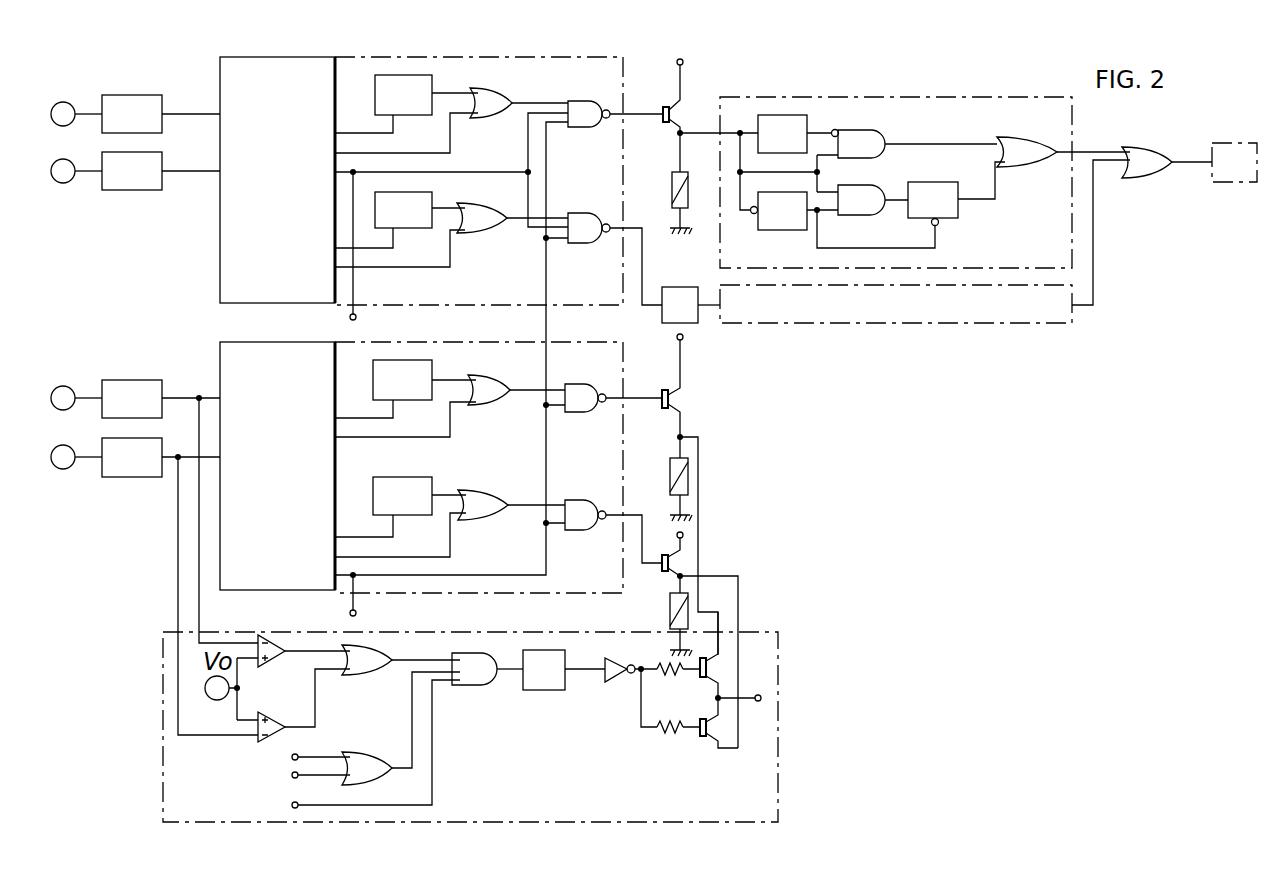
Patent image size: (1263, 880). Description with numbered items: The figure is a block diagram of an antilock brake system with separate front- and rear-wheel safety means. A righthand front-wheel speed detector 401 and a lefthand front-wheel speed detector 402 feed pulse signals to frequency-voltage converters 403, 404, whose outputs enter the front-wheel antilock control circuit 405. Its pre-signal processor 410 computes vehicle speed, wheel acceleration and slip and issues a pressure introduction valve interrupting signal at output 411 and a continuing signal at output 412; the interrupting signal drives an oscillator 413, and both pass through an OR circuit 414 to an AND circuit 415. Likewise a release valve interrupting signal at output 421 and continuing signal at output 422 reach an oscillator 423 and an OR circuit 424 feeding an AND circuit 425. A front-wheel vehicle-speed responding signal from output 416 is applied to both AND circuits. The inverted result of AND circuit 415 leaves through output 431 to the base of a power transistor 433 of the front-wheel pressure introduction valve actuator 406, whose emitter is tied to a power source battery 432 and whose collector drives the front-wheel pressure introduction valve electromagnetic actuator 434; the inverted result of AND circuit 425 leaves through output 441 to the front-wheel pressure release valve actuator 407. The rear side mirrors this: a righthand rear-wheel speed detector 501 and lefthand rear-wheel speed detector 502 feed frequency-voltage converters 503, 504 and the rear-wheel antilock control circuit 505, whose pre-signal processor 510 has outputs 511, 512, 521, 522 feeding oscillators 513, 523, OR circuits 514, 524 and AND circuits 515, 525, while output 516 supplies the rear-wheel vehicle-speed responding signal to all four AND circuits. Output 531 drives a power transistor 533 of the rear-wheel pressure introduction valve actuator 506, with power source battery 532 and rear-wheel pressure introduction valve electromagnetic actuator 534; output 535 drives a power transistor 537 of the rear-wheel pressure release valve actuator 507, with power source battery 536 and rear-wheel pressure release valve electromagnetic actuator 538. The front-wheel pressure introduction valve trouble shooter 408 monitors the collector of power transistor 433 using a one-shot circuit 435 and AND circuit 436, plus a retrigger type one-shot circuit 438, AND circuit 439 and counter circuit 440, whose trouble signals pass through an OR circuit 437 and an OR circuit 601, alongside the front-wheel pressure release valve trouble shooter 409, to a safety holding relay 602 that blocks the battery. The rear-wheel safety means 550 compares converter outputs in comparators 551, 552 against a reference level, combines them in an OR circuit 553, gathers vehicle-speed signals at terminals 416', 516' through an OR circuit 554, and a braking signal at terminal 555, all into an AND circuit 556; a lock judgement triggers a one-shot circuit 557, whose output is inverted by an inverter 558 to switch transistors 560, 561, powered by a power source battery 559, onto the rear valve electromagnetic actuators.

The righthand front-wheel speed detector 401 is at (63, 102).
The lefthand front-wheel speed detector 402 is at (63, 183).
The frequency-voltage converter 403 is at (156, 127).
The frequency-voltage converter 404 is at (156, 184).
The front-wheel antilock control circuit 405 is at (212, 66).
The front-wheel pressure introduction valve actuator 406 is at (658, 87).
The front-wheel pressure release valve actuator 407 is at (676, 280).
The front-wheel pressure introduction valve trouble shooter 408 is at (882, 95).
The front-wheel pressure release valve trouble shooter 409 is at (928, 331).
The pre-signal processor 410 is at (290, 188).
The output 411 is at (344, 130).
The output 412 is at (386, 139).
The oscillator 413 is at (427, 109).
The OR circuit 414 is at (505, 113).
The AND circuit 415 is at (598, 123).
The output 416 is at (431, 213).
The terminal 416' is at (326, 539).
The output 421 is at (344, 244).
The output 422 is at (380, 254).
The oscillator 423 is at (427, 225).
The OR circuit 424 is at (494, 228).
The AND circuit 425 is at (598, 237).
The output 431 is at (611, 121).
The power source battery 432 is at (706, 57).
The power transistor 433 is at (663, 123).
The front-wheel pressure introduction valve electromagnetic actuator 434 is at (672, 189).
The one-shot circuit 435 is at (803, 144).
The AND circuit 436 is at (872, 153).
The OR circuit 437 is at (1045, 162).
The retrigger type one-shot circuit 438 is at (803, 222).
The AND circuit 439 is at (872, 209).
The counter circuit 440 is at (953, 211).
The output 441 is at (611, 236).
The righthand rear-wheel speed detector 501 is at (63, 386).
The lefthand rear-wheel speed detector 502 is at (63, 469).
The frequency-voltage converter 503 is at (156, 412).
The frequency-voltage converter 504 is at (156, 470).
The rear-wheel antilock control circuit 505 is at (211, 356).
The rear-wheel pressure introduction valve actuator 506 is at (656, 372).
The rear-wheel pressure release valve actuator 507 is at (634, 570).
The pre-signal processor 510 is at (290, 463).
The output 511 is at (344, 415).
The output 512 is at (385, 426).
The oscillator 513 is at (425, 394).
The OR circuit 514 is at (503, 400).
The AND circuit 515 is at (595, 407).
The output 516 is at (431, 366).
The terminal 516' is at (326, 698).
The output 521 is at (344, 532).
The output 522 is at (380, 540).
The oscillator 523 is at (425, 510).
The OR circuit 524 is at (495, 515).
The AND circuit 525 is at (595, 524).
The output 531 is at (611, 408).
The power source battery 532 is at (705, 339).
The power transistor 533 is at (663, 410).
The rear-wheel pressure introduction valve electromagnetic actuator 534 is at (670, 482).
The output 535 is at (610, 523).
The power source battery 536 is at (659, 538).
The power transistor 537 is at (663, 572).
The rear-wheel pressure release valve electromagnetic actuator 538 is at (670, 613).
The rear-wheel safety means 550 is at (155, 645).
The comparator 551 is at (293, 664).
The comparator 552 is at (293, 705).
The OR circuit 553 is at (381, 670).
The OR circuit 554 is at (381, 778).
The terminal 555 is at (350, 750).
The AND circuit 556 is at (488, 678).
The one-shot circuit 557 is at (562, 680).
The inverter 558 is at (613, 681).
The power source battery 559 is at (752, 686).
The transistor 560 is at (700, 680).
The transistor 561 is at (700, 737).
The OR circuit 601 is at (1164, 173).
The safety holding relay 602 is at (1234, 162).